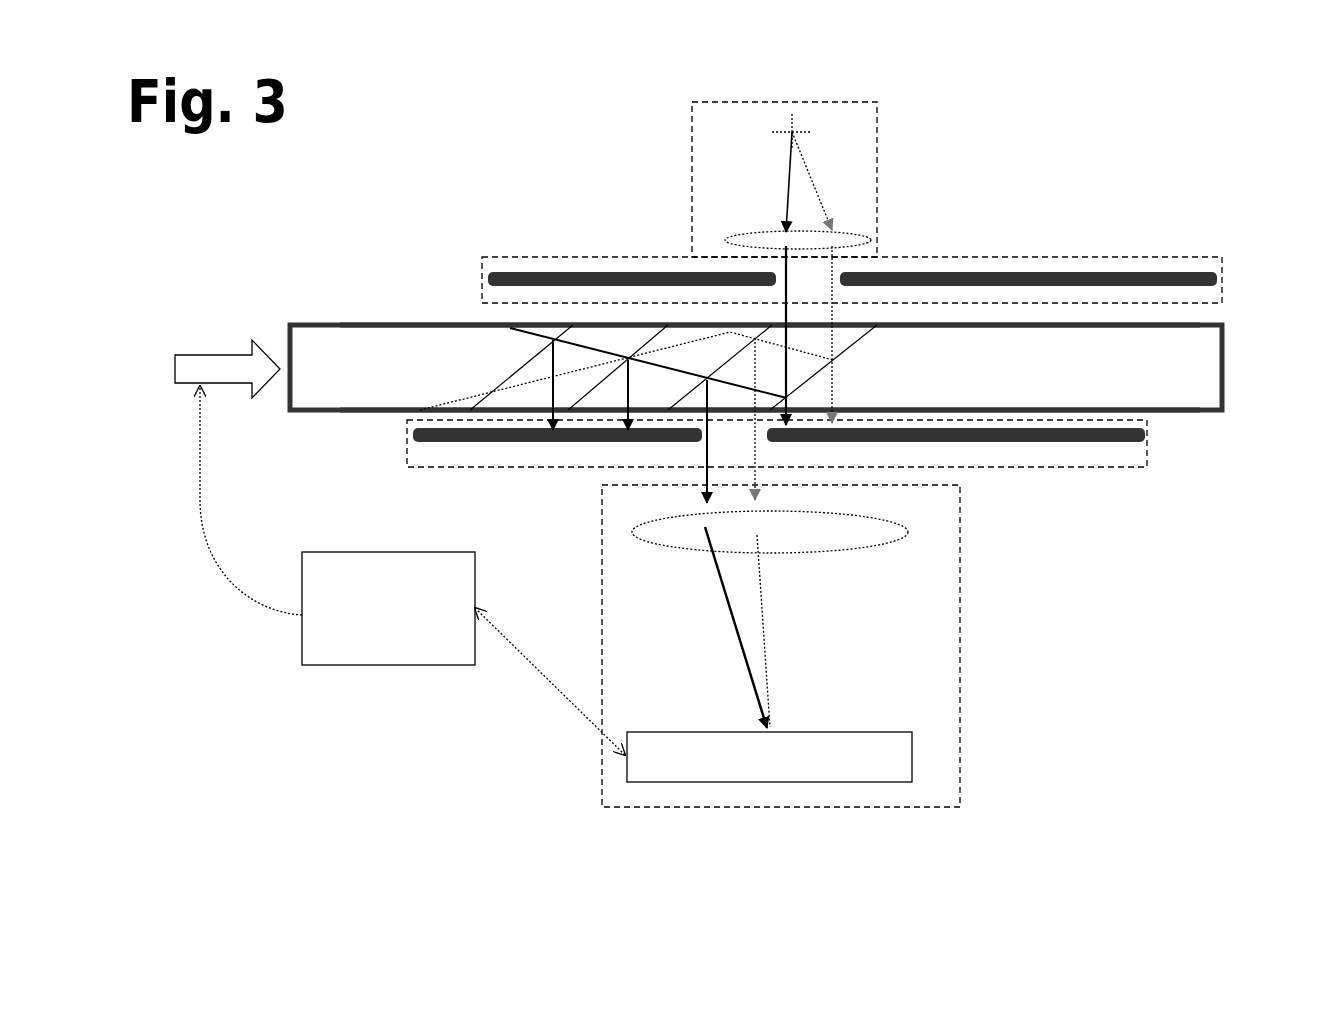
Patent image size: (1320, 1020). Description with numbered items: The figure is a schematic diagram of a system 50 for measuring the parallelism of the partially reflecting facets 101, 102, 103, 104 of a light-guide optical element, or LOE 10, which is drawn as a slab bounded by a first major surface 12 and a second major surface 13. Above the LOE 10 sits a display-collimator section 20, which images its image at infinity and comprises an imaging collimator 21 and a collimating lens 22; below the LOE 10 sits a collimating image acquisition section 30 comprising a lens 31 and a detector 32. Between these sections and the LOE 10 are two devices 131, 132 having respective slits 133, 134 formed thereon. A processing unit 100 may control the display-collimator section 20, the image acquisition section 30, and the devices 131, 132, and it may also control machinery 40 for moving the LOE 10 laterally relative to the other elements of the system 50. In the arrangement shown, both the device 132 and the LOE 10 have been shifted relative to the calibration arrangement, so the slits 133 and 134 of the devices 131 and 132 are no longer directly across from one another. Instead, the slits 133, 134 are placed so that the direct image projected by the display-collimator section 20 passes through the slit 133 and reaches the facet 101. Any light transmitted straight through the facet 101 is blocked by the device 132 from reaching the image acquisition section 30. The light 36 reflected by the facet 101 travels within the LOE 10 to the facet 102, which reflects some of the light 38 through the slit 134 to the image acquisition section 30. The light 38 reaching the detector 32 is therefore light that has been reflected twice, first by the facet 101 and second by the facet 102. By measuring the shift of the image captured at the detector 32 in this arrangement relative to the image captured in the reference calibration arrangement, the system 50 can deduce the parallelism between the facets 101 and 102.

The LOE 10 is at (1189, 386).
The first major surface 12 is at (338, 323).
The second major surface 13 is at (330, 412).
The display-collimator section 20 is at (885, 160).
The imaging collimator 21 is at (825, 132).
The collimating lens 22 is at (885, 238).
The image acquisition section 30 is at (963, 690).
The lens 31 is at (919, 532).
The detector 32 is at (846, 771).
The light reflected by facet 101 36 is at (763, 392).
The light reflected by facet 102 38 is at (703, 450).
The machinery 40 is at (229, 381).
The system 50 is at (620, 175).
The processing unit 100 is at (412, 659).
The facet 101 is at (841, 334).
The facet 102 is at (720, 367).
The facet 103 is at (618, 377).
The facet 104 is at (520, 377).
The device 131 is at (1224, 273).
The device 132 is at (807, 443).
The slit 133 is at (800, 278).
The slit 134 is at (737, 441).